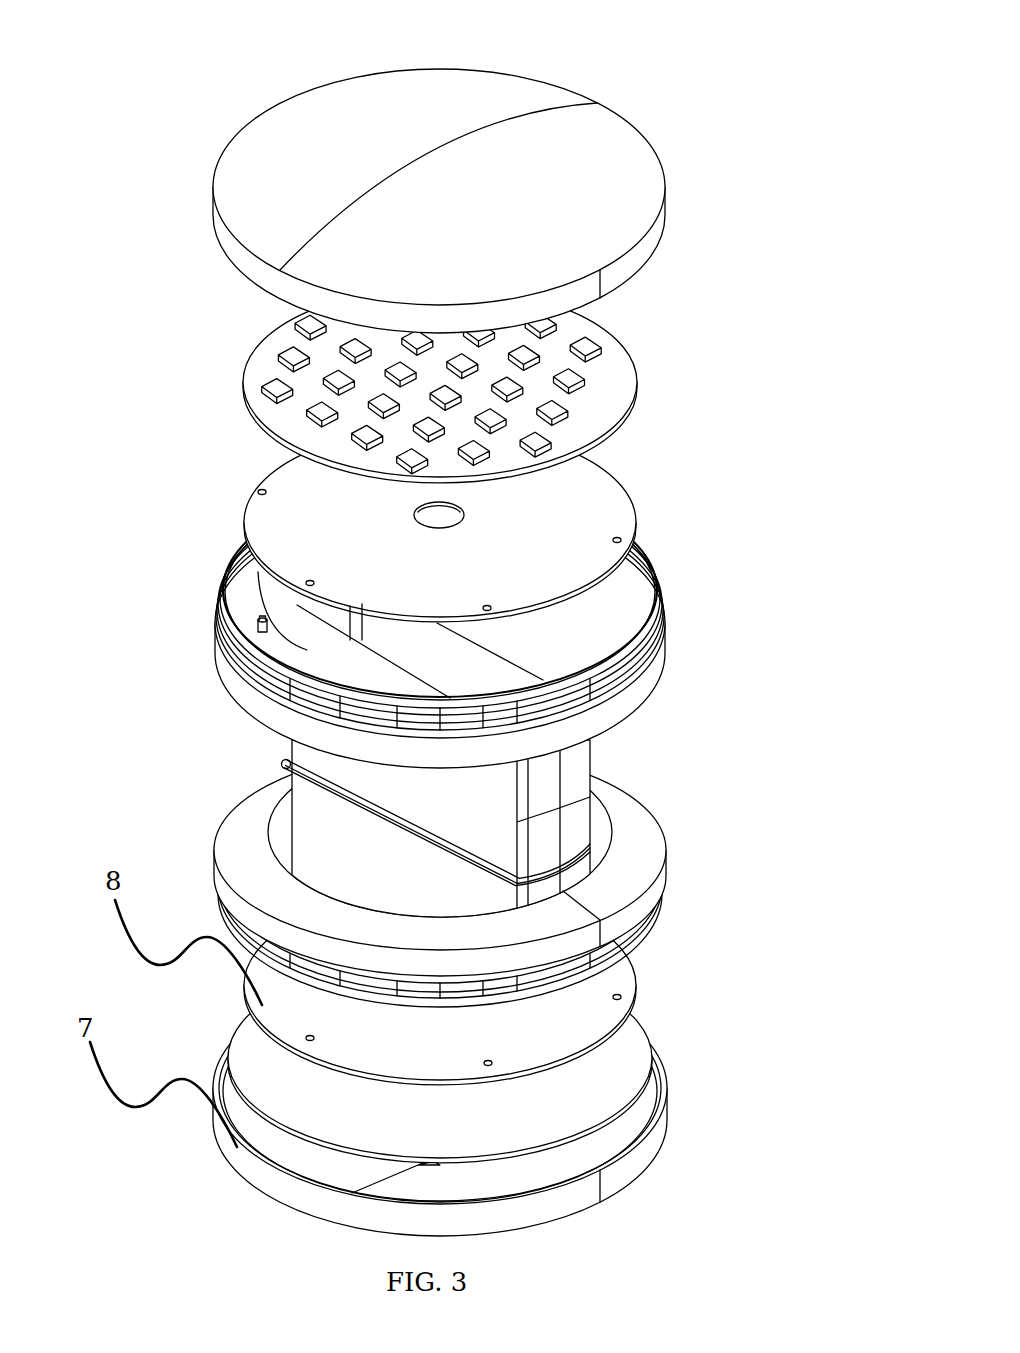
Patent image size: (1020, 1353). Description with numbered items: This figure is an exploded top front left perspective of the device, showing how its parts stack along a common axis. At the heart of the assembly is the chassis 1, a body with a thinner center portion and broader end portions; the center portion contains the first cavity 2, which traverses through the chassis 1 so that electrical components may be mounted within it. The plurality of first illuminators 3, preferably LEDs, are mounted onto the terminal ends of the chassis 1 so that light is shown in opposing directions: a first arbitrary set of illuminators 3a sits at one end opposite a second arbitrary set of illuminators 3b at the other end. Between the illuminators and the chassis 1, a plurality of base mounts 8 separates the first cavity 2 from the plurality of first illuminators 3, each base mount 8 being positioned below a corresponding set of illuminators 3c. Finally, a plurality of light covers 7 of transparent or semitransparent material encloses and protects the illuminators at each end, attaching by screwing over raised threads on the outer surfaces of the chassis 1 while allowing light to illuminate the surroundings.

The chassis 1 is at (624, 816).
The first cavity 2 is at (398, 665).
The plurality of first illuminators 3 is at (431, 361).
The first arbitrary set of illuminators 3a is at (277, 388).
The second arbitrary set of illuminators 3b is at (610, 1080).
The corresponding set of illuminators 3c is at (577, 380).
The plurality of light covers 7 is at (625, 148).
The plurality of base mounts 8 is at (615, 493).